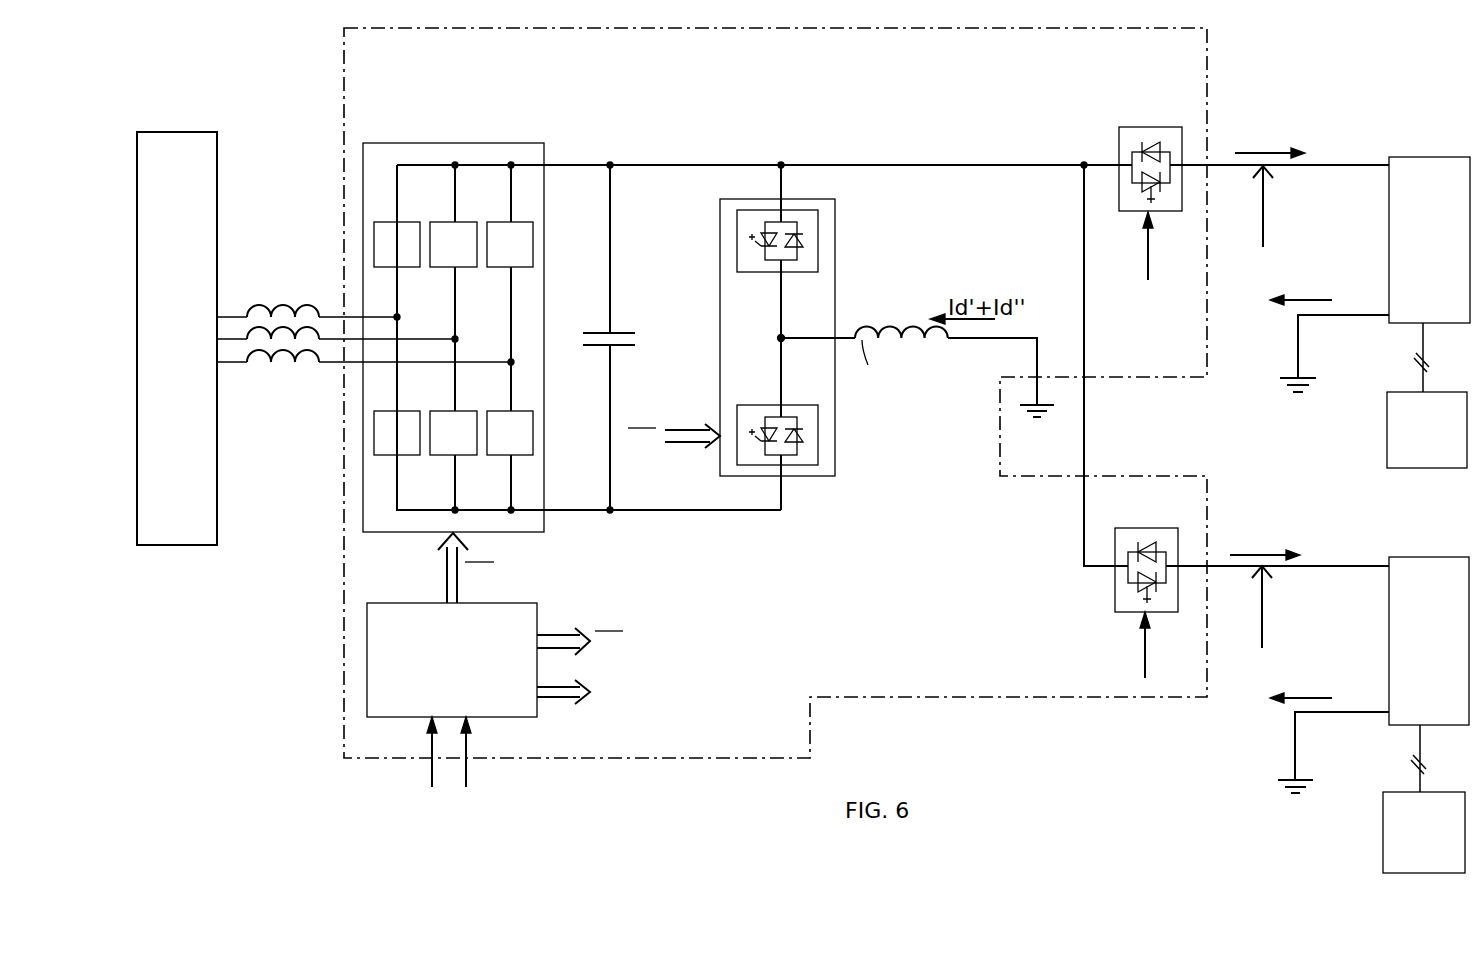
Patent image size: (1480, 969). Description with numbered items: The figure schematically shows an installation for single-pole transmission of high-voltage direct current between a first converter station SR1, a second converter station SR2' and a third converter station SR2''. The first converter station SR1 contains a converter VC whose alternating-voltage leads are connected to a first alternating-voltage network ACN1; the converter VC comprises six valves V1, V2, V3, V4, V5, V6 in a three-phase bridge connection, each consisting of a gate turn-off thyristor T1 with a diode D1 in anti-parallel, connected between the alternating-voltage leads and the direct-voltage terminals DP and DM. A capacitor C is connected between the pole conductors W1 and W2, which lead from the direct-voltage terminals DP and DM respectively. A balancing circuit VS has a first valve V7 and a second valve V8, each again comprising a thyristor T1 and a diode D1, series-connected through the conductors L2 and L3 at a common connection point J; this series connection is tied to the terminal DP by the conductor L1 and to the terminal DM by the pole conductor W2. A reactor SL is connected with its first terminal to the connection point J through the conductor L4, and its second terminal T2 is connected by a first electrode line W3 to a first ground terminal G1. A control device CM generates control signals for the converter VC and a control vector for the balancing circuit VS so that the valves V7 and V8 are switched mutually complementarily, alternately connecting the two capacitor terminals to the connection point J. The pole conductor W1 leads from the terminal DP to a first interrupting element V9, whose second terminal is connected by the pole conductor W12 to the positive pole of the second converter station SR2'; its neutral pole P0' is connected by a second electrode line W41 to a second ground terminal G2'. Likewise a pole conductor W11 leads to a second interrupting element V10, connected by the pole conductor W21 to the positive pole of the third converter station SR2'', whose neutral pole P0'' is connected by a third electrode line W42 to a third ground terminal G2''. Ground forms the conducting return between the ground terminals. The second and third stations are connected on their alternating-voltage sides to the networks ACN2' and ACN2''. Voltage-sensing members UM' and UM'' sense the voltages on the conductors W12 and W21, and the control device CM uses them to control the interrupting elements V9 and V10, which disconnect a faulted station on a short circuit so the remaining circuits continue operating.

The first alternating-voltage network ACN1 is at (180, 132).
The converter VC is at (572, 330).
The valve V1 is at (397, 244).
The valve V2 is at (510, 433).
The valve V3 is at (453, 244).
The valve V4 is at (397, 433).
The valve V5 is at (510, 244).
The valve V6 is at (453, 433).
The direct-voltage terminal DP is at (553, 163).
The direct-voltage terminal DM is at (548, 512).
The pole conductor W1 is at (965, 163).
The pole conductor W2 is at (635, 512).
The capacitor C is at (617, 330).
The balancing circuit VS is at (767, 337).
The first valve V7 is at (783, 224).
The second valve V8 is at (750, 467).
The gate turn-off thyristor T1 is at (755, 258).
The diode D1 is at (818, 258).
The electric conductor L1 is at (782, 170).
The electric conductor L2 is at (781, 300).
The electric conductor L3 is at (781, 383).
The electric conductor L4 is at (813, 338).
The connection point J is at (783, 340).
The reactor SL is at (900, 322).
The second terminal T2 is at (944, 340).
The first electrode line W3 is at (1020, 338).
The first ground terminal G1 is at (1037, 412).
The control device CM is at (367, 690).
The first converter station SR1 is at (1207, 84).
The pole conductor W11 is at (1086, 437).
The first interrupting element V9 is at (1152, 127).
The second interrupting element V10 is at (1170, 528).
The pole conductor W12 is at (1338, 165).
The pole conductor W21 is at (1334, 566).
The first voltage-sensing member UM' is at (1284, 214).
The second voltage-sensing member UM'' is at (1283, 613).
The second converter station SR2' is at (1429, 233).
The third converter station SR2'' is at (1429, 636).
The neutral pole P0' is at (1329, 326).
The neutral pole P0'' is at (1329, 725).
The second electrode line W41 is at (1298, 335).
The third electrode line W42 is at (1295, 740).
The second ground terminal G2' is at (1249, 398).
The third ground terminal G2'' is at (1246, 800).
The second three-phase alternating-voltage network ACN2' is at (1361, 430).
The third three-phase alternating-voltage network ACN2'' is at (1353, 832).